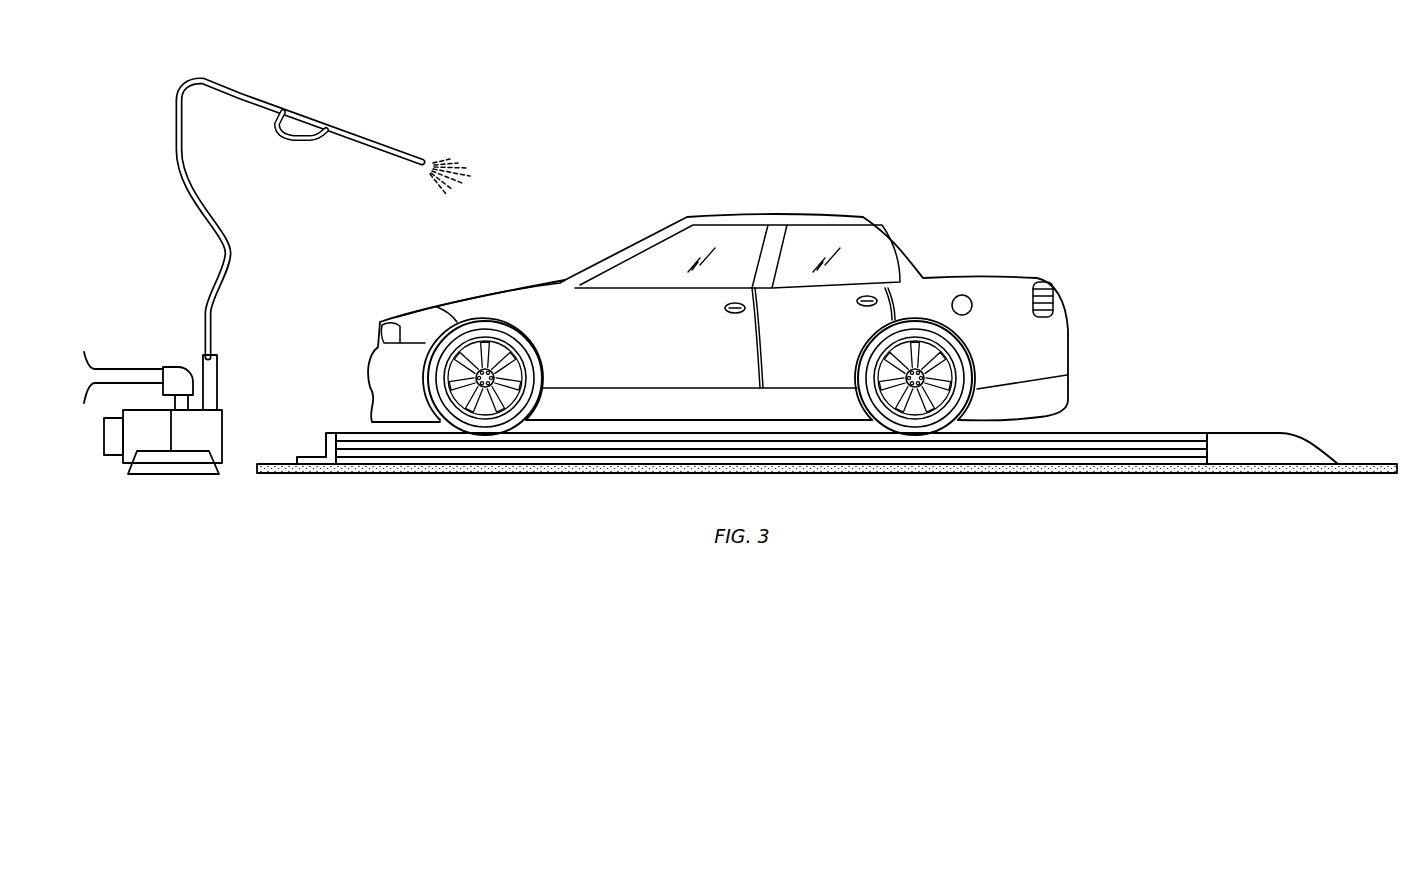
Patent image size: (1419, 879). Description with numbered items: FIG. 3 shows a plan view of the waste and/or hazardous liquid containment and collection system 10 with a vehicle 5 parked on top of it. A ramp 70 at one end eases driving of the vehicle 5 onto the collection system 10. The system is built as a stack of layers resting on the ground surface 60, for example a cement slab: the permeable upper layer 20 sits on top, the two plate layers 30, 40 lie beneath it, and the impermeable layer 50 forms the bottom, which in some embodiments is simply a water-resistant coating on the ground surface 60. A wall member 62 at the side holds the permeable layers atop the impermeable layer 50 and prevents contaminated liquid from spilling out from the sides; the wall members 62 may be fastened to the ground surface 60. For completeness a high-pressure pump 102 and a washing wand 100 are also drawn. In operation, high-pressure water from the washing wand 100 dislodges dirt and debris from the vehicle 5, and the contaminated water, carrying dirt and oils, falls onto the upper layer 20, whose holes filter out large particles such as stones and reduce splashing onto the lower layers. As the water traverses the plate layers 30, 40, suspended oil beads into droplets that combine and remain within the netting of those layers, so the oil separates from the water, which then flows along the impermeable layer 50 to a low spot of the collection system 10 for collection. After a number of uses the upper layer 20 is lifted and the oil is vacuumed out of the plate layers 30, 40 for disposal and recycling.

The vehicle 5 is at (972, 232).
The waste and/or hazardous liquid containment and collection system 10 is at (823, 447).
The upper layer 20 is at (1108, 433).
The plate layer 30 is at (1120, 445).
The plate layer 40 is at (1070, 452).
The impermeable layer 50 is at (1000, 460).
The ground surface 60 is at (932, 470).
The wall member 62 is at (322, 447).
The ramp 70 is at (1313, 445).
The washing wand 100 is at (353, 136).
The high-pressure pump 102 is at (213, 422).